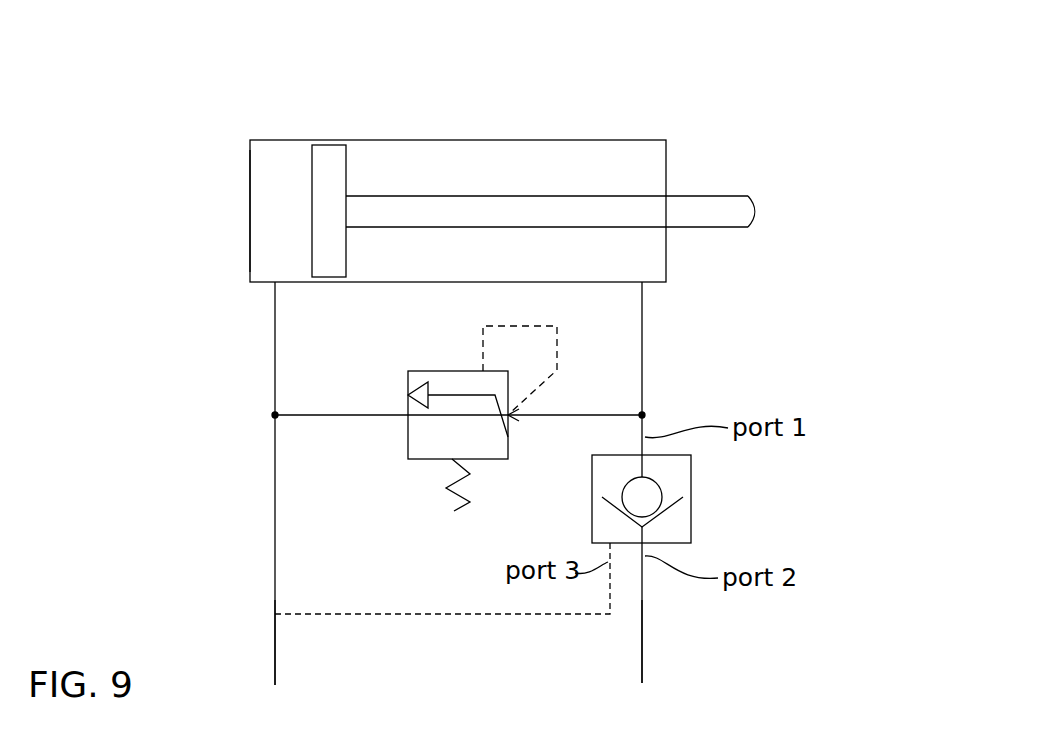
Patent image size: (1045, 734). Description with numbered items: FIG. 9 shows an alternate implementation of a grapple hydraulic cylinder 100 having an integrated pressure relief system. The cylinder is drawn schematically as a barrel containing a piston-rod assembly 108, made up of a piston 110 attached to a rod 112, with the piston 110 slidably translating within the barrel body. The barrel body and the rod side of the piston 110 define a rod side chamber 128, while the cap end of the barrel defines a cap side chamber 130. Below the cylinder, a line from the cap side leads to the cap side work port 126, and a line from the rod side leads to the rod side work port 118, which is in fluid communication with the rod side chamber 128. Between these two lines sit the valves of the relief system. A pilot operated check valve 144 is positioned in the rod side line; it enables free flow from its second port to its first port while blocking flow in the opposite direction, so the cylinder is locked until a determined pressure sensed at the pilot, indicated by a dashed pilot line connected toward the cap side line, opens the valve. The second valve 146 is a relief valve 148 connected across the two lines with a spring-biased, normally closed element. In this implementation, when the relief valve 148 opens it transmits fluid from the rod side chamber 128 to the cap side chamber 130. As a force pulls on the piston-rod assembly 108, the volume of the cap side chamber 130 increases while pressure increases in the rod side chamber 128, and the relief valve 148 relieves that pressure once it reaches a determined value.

The grapple hydraulic cylinder 100 is at (693, 94).
The piston-rod assembly 108 is at (756, 155).
The piston 110 is at (329, 173).
The rod 112 is at (508, 218).
The rod side work port 118 is at (642, 676).
The cap side work port 126 is at (275, 675).
The rod side chamber 128 is at (556, 175).
The cap side chamber 130 is at (277, 195).
The pilot operated check valve 144 is at (592, 503).
The second valve 146 is at (408, 372).
The relief valve 148 is at (408, 442).